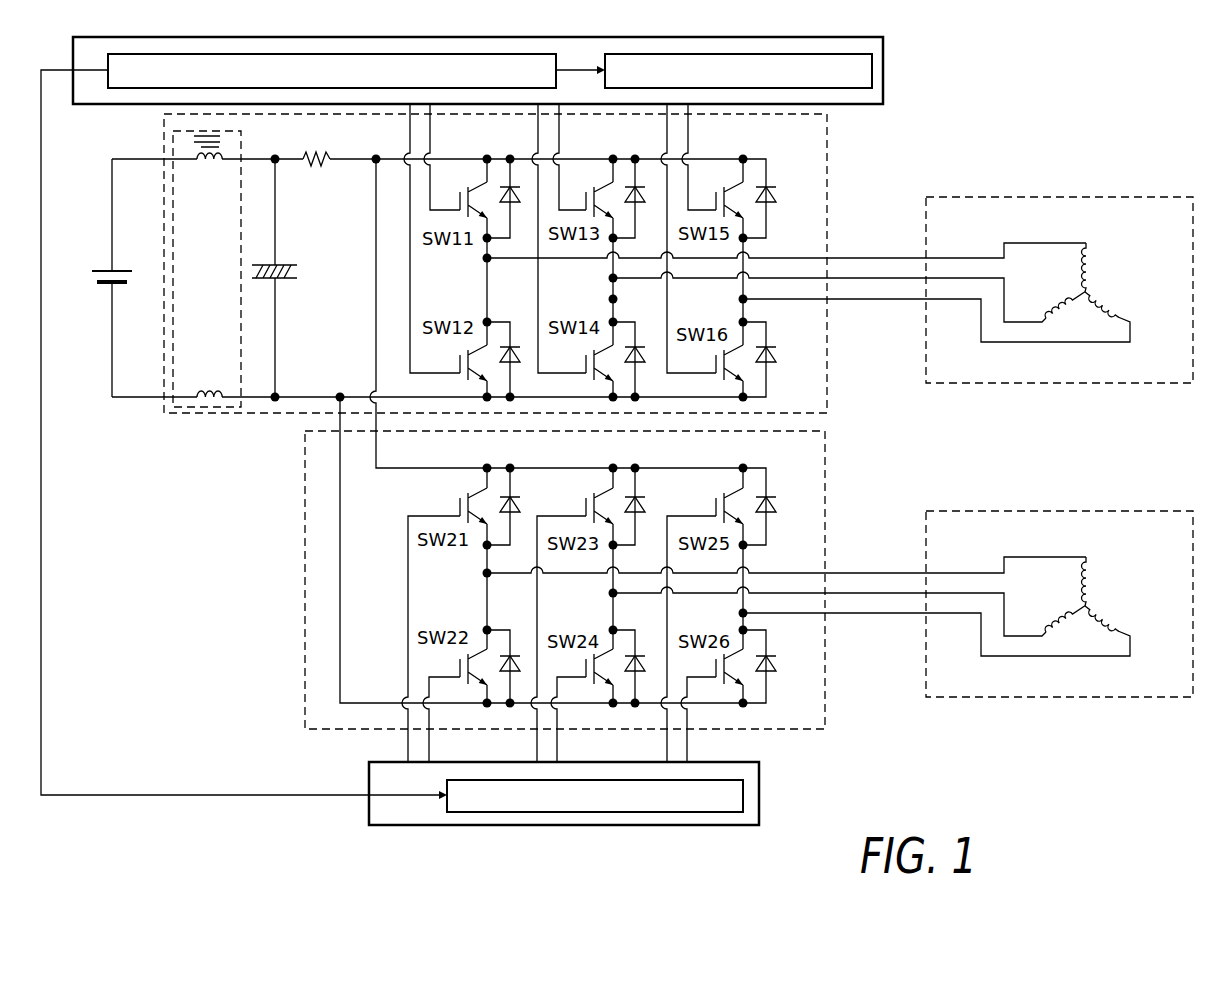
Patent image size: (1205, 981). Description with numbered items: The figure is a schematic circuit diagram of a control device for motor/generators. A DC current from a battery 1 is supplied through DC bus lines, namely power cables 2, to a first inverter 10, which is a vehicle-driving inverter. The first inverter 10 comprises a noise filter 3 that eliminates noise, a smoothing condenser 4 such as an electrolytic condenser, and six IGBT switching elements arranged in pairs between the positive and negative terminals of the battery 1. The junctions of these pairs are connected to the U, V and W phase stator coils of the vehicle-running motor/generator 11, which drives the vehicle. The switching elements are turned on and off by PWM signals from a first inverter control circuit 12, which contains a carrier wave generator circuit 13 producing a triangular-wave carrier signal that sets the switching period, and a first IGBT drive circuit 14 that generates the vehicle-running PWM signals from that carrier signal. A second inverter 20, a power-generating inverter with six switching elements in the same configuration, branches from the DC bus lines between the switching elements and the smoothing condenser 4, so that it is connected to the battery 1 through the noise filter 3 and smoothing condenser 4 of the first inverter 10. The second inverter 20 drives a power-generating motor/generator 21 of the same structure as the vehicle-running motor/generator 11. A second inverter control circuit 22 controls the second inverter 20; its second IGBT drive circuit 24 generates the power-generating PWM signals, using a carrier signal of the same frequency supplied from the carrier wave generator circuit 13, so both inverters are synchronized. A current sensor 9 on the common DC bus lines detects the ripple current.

The battery 1 is at (104, 290).
The power cables 2 is at (136, 159).
The noise filter 3 is at (183, 408).
The smoothing condenser 4 is at (297, 279).
The current sensor 9 is at (319, 163).
The first inverter 10 is at (232, 414).
The vehicle-running motor/generator 11 is at (1030, 385).
The first inverter control circuit 12 is at (883, 46).
The carrier wave generator circuit 13 is at (512, 54).
The first IGBT drive circuit 14 is at (650, 54).
The second inverter 20 is at (334, 731).
The power-generating motor/generator 21 is at (972, 697).
The second inverter control circuit 22 is at (759, 800).
The second IGBT drive circuit 24 is at (558, 813).